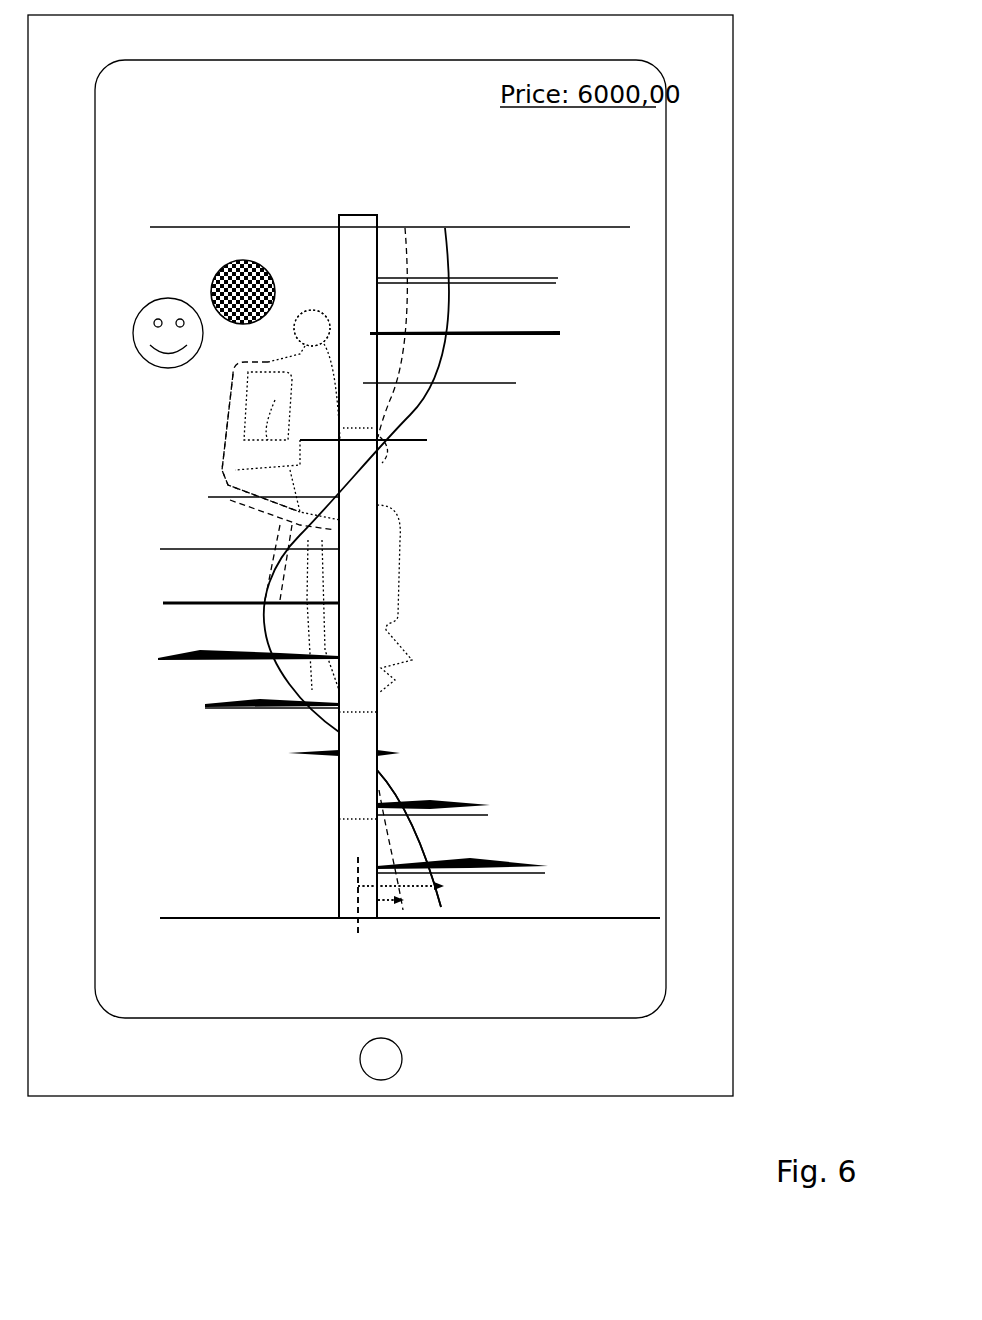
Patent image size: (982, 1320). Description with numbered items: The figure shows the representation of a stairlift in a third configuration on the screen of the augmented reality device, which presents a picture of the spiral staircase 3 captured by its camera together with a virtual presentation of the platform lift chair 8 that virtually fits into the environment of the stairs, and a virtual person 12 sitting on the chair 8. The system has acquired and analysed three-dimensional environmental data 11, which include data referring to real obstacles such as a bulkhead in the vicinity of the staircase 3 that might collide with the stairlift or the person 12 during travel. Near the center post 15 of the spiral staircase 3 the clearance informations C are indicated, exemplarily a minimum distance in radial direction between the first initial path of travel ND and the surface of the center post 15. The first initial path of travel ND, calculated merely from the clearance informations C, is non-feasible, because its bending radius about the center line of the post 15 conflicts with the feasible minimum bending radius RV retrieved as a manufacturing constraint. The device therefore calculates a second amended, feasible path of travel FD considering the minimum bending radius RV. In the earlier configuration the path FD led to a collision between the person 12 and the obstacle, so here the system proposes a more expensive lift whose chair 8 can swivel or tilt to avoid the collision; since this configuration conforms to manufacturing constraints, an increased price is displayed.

The spiral staircase 3 is at (180, 203).
The 3D environmental data 11 is at (245, 262).
The virtual person 12 is at (312, 308).
The platform lift chair 8 is at (222, 510).
The center post 15 is at (339, 807).
The first initial path of travel ND is at (395, 836).
The second amended path of travel FD is at (438, 848).
The reference position P is at (356, 907).
The clearance informations C is at (378, 905).
The feasible minimum bending radius RV is at (418, 893).